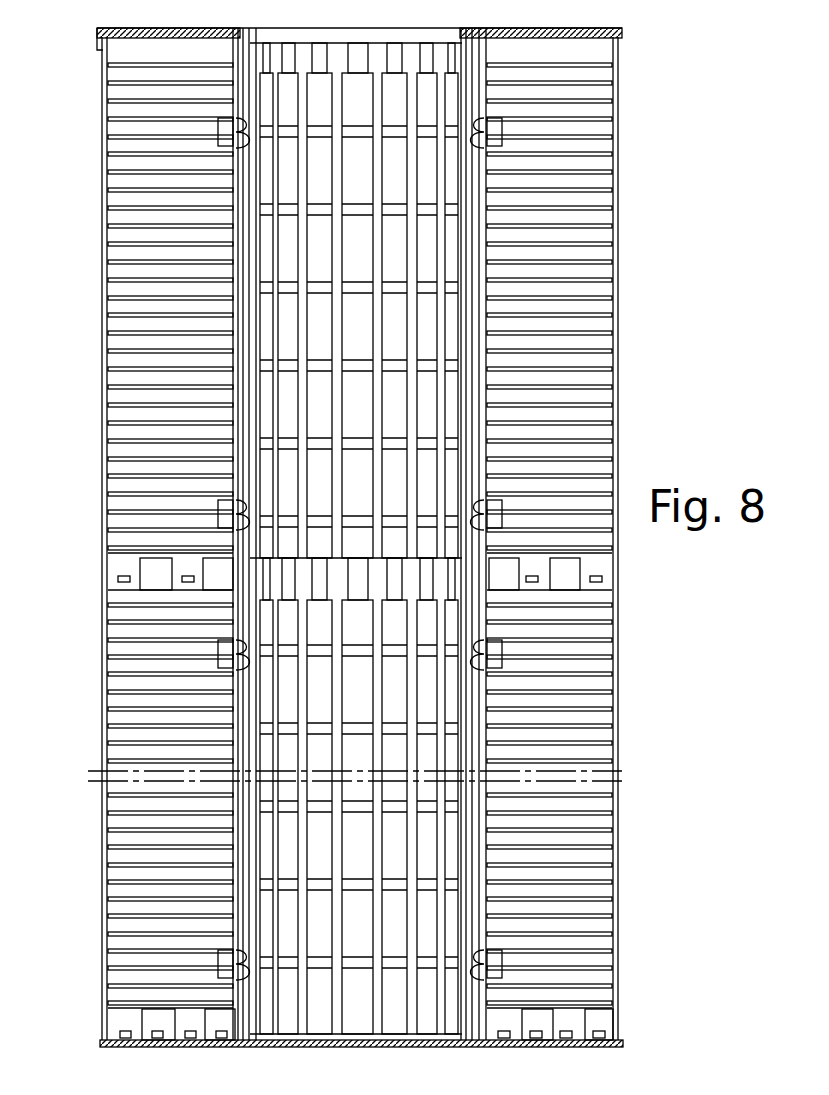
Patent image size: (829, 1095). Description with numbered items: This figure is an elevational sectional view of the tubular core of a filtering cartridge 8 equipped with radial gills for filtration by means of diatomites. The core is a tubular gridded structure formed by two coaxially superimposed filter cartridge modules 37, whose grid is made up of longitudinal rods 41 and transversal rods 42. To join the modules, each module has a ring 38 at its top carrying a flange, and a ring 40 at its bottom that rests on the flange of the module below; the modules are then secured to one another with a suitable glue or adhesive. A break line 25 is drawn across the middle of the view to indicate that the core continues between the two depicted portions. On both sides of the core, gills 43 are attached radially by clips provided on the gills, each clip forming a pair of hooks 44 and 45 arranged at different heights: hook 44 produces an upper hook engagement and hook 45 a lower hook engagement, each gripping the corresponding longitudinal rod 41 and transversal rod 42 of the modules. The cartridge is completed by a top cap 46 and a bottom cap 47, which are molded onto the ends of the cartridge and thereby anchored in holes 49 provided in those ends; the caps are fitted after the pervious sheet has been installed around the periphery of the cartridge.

The filtering cartridge 8 is at (620, 257).
The parting line 25 is at (618, 745).
The filter cartridge module 37 is at (430, 376).
The ring 38 is at (245, 55).
The ring 40 is at (490, 1020).
The longitudinal rod 41 is at (305, 259).
The transversal rod 42 is at (290, 917).
The gill 43 is at (588, 124).
The hook 44 is at (483, 662).
The hook 45 is at (228, 500).
The top cap 46 is at (565, 30).
The bottom cap 47 is at (565, 1048).
The hole 49 is at (195, 1045).